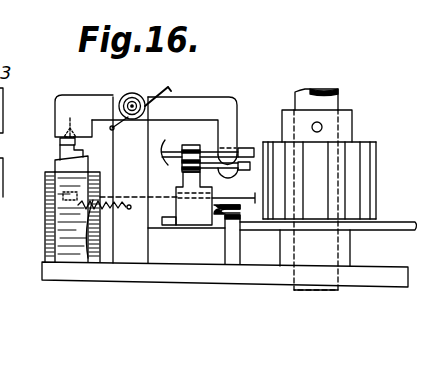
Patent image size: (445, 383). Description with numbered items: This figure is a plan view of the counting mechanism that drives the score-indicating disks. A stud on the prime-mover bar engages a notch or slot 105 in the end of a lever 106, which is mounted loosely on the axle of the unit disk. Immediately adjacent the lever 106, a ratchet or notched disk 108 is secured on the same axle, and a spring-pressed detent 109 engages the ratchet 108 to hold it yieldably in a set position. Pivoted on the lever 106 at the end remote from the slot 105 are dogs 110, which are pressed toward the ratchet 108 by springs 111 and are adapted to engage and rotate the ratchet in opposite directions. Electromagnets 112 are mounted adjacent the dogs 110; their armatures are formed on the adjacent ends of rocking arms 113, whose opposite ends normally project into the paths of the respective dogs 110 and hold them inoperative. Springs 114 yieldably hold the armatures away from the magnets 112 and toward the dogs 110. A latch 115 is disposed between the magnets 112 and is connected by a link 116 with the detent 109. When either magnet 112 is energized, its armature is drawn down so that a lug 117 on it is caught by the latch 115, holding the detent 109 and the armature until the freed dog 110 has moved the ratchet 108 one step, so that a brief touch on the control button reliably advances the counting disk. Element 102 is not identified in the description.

The holder 102 is at (295, 96).
The notch or slot 105 is at (12, 167).
The lever 106 is at (395, 222).
The ratchet or notched disk 108 is at (368, 147).
The spring-pressed detent 109 is at (227, 188).
The dogs 110 is at (252, 148).
The springs 111 is at (164, 146).
The electromagnets 112 is at (45, 243).
The rocking arms 113 is at (108, 99).
The springs 114 is at (159, 86).
The latch 115 is at (58, 150).
The link 116 is at (162, 197).
The lug 117 is at (84, 116).